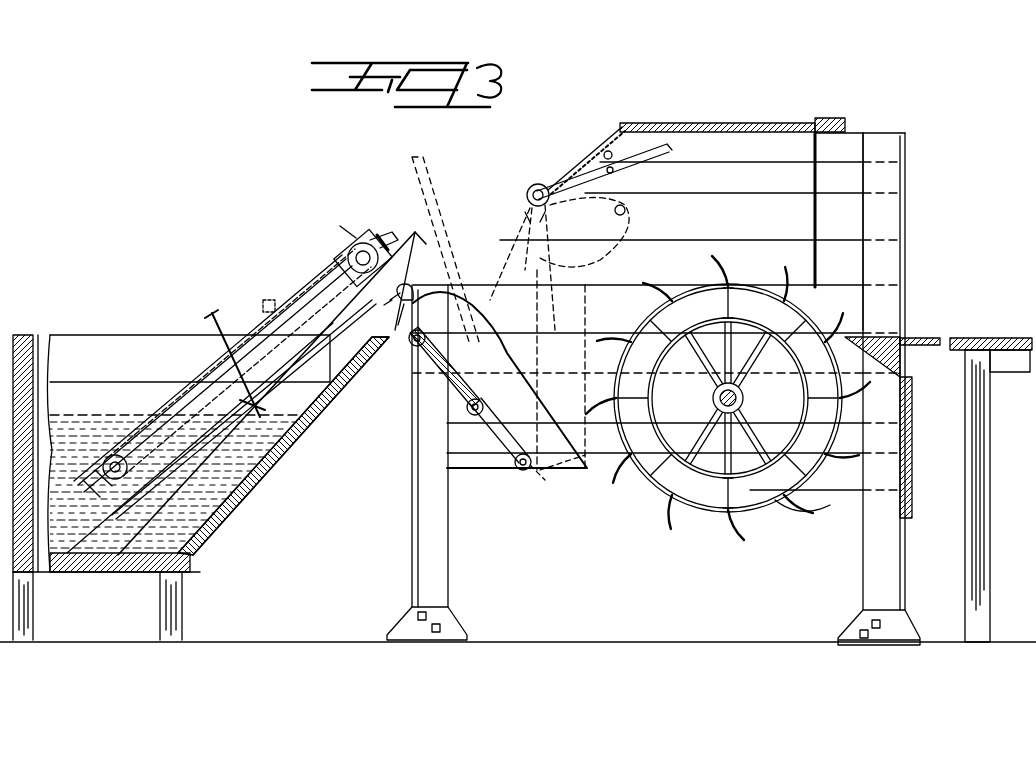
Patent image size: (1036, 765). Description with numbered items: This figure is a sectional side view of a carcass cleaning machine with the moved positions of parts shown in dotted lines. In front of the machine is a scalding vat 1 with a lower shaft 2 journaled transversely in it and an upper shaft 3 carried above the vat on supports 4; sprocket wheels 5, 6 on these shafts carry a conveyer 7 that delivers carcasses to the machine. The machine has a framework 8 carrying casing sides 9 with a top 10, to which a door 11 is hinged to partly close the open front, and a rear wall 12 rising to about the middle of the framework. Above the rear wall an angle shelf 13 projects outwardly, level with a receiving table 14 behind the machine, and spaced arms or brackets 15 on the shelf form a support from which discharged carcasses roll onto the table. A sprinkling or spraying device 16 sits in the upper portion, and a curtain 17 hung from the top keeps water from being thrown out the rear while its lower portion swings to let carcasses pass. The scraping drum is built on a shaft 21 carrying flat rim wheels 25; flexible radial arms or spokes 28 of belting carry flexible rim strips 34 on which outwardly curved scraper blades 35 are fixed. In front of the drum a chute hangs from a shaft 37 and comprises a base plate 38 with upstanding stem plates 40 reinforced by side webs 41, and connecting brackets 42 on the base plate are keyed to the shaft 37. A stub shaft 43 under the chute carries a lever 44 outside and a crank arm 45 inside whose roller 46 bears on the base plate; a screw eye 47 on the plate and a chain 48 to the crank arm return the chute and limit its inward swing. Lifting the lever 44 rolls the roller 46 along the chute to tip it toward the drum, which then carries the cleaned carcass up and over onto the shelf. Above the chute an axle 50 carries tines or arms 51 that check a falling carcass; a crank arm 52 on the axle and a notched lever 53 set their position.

The scalding vat 1 is at (205, 535).
The lower shaft 2 is at (118, 478).
The upper shaft 3 is at (368, 246).
The supports 4 is at (420, 240).
The sprocket wheel 5 is at (130, 440).
The sprocket wheel 6 is at (340, 265).
The conveyer 7 is at (198, 385).
The framework 8 is at (890, 578).
The casing sides 9 is at (656, 315).
The top 10 is at (665, 124).
The door 11 is at (612, 143).
The rear wall 12 is at (906, 443).
The angle shelf 13 is at (921, 340).
The receiving table 14 is at (978, 340).
The arms or brackets 15 is at (875, 340).
The sprinkling or spraying device 16 is at (595, 163).
The curtain 17 is at (816, 220).
The scraping wheel shaft 21 is at (727, 382).
The flat rim wheels 25 is at (758, 384).
The flexible radial arms or spokes 28 is at (716, 485).
The flexible rim strips 34 is at (690, 512).
The scraper blades 35 is at (812, 494).
The chute shaft 37 is at (516, 470).
The base plate 38 is at (499, 430).
The stem plates 40 is at (582, 346).
The side webs 41 is at (500, 380).
The connecting brackets 42 is at (530, 470).
The stub shaft 43 is at (475, 416).
The lever 44 is at (430, 185).
The crank arm 45 is at (414, 369).
The roller 46 is at (356, 348).
The screw eye 47 is at (592, 292).
The chain 48 is at (590, 316).
The axle 50 is at (538, 185).
The tines or arms 51 is at (650, 165).
The crank arm 52 is at (527, 214).
The lever 53 is at (396, 292).